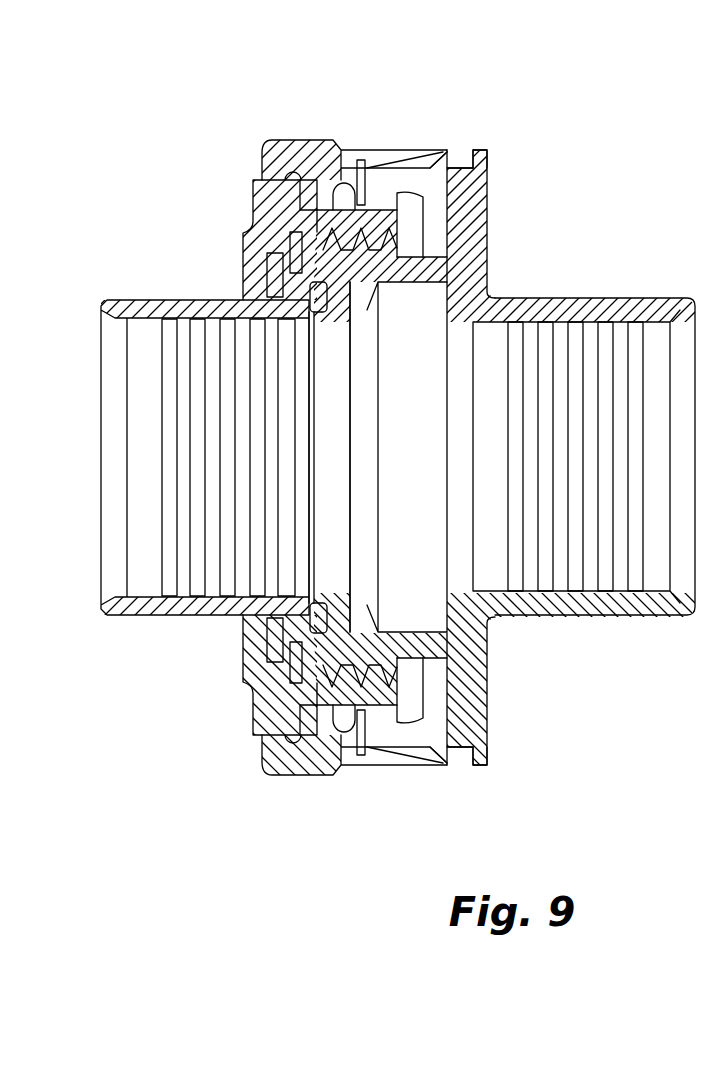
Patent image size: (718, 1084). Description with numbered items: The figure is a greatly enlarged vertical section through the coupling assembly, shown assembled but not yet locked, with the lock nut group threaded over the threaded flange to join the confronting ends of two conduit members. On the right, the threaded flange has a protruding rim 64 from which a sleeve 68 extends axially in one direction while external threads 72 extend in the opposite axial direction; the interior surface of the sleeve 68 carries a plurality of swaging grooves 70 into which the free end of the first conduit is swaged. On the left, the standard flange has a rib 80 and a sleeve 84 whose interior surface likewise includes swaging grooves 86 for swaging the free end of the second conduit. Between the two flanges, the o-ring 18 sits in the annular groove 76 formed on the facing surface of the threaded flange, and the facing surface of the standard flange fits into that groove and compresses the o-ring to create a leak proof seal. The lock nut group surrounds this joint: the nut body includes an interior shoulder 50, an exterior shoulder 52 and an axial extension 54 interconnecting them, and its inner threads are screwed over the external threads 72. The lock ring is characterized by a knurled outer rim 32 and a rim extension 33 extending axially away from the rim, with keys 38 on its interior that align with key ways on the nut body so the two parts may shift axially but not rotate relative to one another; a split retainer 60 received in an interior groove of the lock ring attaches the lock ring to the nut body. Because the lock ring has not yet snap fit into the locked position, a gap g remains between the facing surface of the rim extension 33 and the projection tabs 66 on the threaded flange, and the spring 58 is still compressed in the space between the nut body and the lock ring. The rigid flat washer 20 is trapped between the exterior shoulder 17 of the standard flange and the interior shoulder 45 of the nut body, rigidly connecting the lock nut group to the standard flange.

The exterior shoulder 17 is at (340, 613).
The o-ring 18 is at (318, 605).
The flat washer 20 is at (290, 300).
The outer rim 32 is at (338, 140).
The rim extension 33 is at (433, 148).
The keys 38 is at (300, 178).
The interior shoulder 45 is at (262, 650).
The interior shoulder 50 is at (300, 193).
The exterior shoulder 52 is at (447, 212).
The axial extension 54 is at (367, 168).
The spring 58 is at (340, 162).
The split retainer 60 is at (367, 170).
The protruding rim 64 is at (487, 250).
The projection tabs 66 is at (488, 162).
The sleeve 68 is at (588, 300).
The swaging grooves 70 is at (637, 553).
The external threads 72 is at (368, 622).
The annular groove 76 is at (318, 615).
The rib 80 is at (303, 297).
The sleeve 84 is at (137, 300).
The swaging grooves 86 is at (170, 575).
The gap g is at (462, 166).